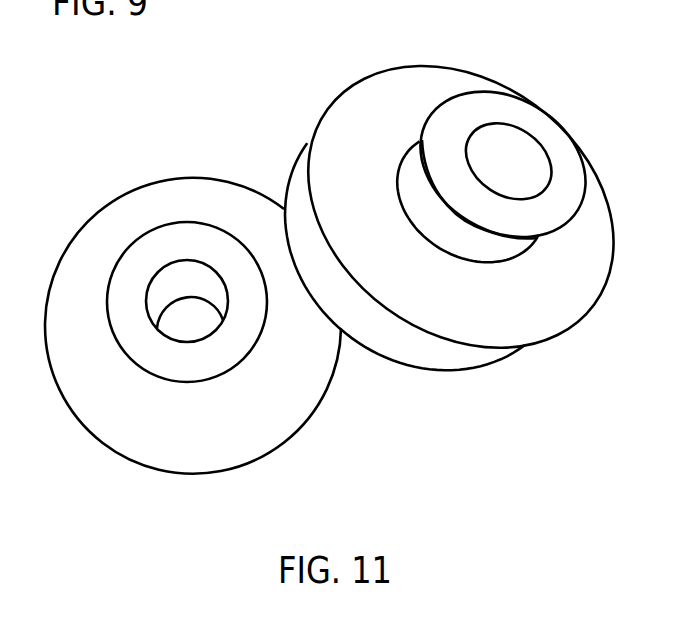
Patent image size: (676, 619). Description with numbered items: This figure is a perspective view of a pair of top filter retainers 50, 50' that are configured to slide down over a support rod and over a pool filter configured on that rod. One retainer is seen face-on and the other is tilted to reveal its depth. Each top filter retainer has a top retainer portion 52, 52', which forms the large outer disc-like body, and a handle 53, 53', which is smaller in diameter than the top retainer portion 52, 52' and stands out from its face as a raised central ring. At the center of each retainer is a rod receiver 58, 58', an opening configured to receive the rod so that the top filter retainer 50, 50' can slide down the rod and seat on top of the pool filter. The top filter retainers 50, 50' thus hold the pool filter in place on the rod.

The top filter retainer 50 is at (193, 281).
The top retainer portion 52 is at (193, 303).
The handle 53 is at (187, 248).
The rod receiver 58 is at (187, 215).
The top filter retainer 50' is at (460, 203).
The top retainer portion 52' is at (460, 203).
The handle 53' is at (503, 147).
The rod receiver 58' is at (424, 122).